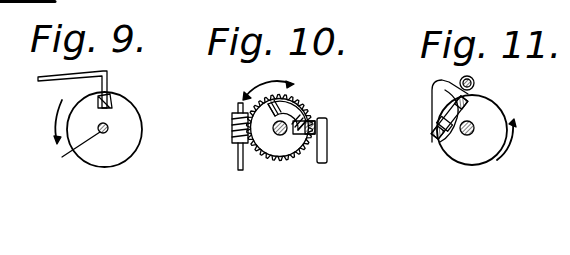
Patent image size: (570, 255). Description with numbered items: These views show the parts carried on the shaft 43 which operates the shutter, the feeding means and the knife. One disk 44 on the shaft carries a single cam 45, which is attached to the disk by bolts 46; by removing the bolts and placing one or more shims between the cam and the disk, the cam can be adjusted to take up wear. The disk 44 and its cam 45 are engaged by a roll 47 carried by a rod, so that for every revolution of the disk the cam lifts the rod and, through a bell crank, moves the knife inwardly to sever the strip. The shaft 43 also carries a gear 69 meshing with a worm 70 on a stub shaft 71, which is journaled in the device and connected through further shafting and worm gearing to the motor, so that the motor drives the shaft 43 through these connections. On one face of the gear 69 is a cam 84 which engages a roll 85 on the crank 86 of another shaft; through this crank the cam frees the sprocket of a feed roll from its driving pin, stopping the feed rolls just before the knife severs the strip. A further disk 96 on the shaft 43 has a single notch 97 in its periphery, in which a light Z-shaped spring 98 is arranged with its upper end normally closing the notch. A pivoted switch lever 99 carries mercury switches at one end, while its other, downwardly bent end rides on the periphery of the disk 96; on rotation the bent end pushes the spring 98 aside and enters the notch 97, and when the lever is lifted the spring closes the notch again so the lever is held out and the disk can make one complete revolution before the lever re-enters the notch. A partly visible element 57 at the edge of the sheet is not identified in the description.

In FIG. 9, the shaft 43 is at (71, 159).
In FIG. 10, the shaft 43 is at (284, 135).
In FIG. 11, the shaft 43 is at (463, 135).
In FIG. 11, the cam disc 44 is at (488, 108).
In FIG. 11, the cam lobe 45 is at (437, 95).
In FIG. 11, the adjusting screw 46 is at (442, 140).
In FIG. 11, the pin 47 is at (475, 82).
In FIG. 11, the lever 57 is at (559, 161).
In FIG. 10, the worm gear 69 is at (283, 147).
In FIG. 10, the worm 70 is at (232, 132).
In FIG. 10, the worm shaft 71 is at (240, 160).
In FIG. 10, the sector 84 is at (298, 106).
In FIG. 10, the pin 85 is at (308, 118).
In FIG. 10, the bar 86 is at (327, 137).
In FIG. 9, the disc 96 is at (130, 132).
In FIG. 9, the arrow / lever 97 is at (102, 97).
In FIG. 9, the pawl 98 is at (112, 92).
In FIG. 9, the arm 99 is at (62, 76).